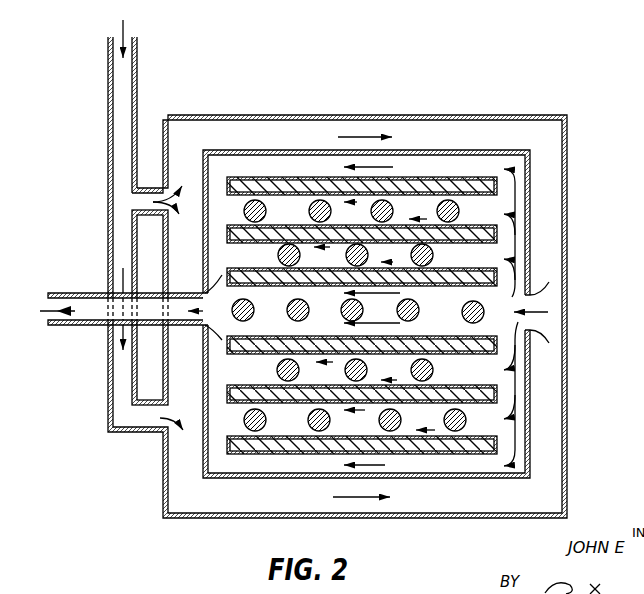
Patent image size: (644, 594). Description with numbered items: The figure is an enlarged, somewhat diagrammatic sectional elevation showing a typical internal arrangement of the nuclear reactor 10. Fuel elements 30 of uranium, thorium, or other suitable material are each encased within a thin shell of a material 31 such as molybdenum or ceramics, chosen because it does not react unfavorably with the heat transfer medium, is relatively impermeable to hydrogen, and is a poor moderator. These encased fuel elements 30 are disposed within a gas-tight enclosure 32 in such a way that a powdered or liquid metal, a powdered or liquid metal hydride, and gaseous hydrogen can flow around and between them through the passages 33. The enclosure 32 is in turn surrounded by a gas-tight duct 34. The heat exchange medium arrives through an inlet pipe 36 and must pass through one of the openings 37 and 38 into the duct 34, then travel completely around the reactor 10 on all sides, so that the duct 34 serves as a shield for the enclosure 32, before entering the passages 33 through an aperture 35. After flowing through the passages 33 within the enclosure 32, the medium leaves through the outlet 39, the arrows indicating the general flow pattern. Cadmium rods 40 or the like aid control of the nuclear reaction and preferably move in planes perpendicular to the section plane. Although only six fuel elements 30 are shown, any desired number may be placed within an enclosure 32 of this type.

The reactor 10 is at (333, 280).
The fuel elements 30 is at (302, 190).
The thin shell of material 31 is at (280, 177).
The gas-tight enclosure 32 is at (492, 150).
The passages 33 is at (422, 162).
The gas-tight duct 34 is at (284, 127).
The aperture 35 is at (537, 332).
The inlet pipe 36 is at (122, 99).
The opening 37 is at (153, 202).
The opening 38 is at (140, 418).
The outlet 39 is at (73, 300).
The cadmium rods 40 is at (462, 313).